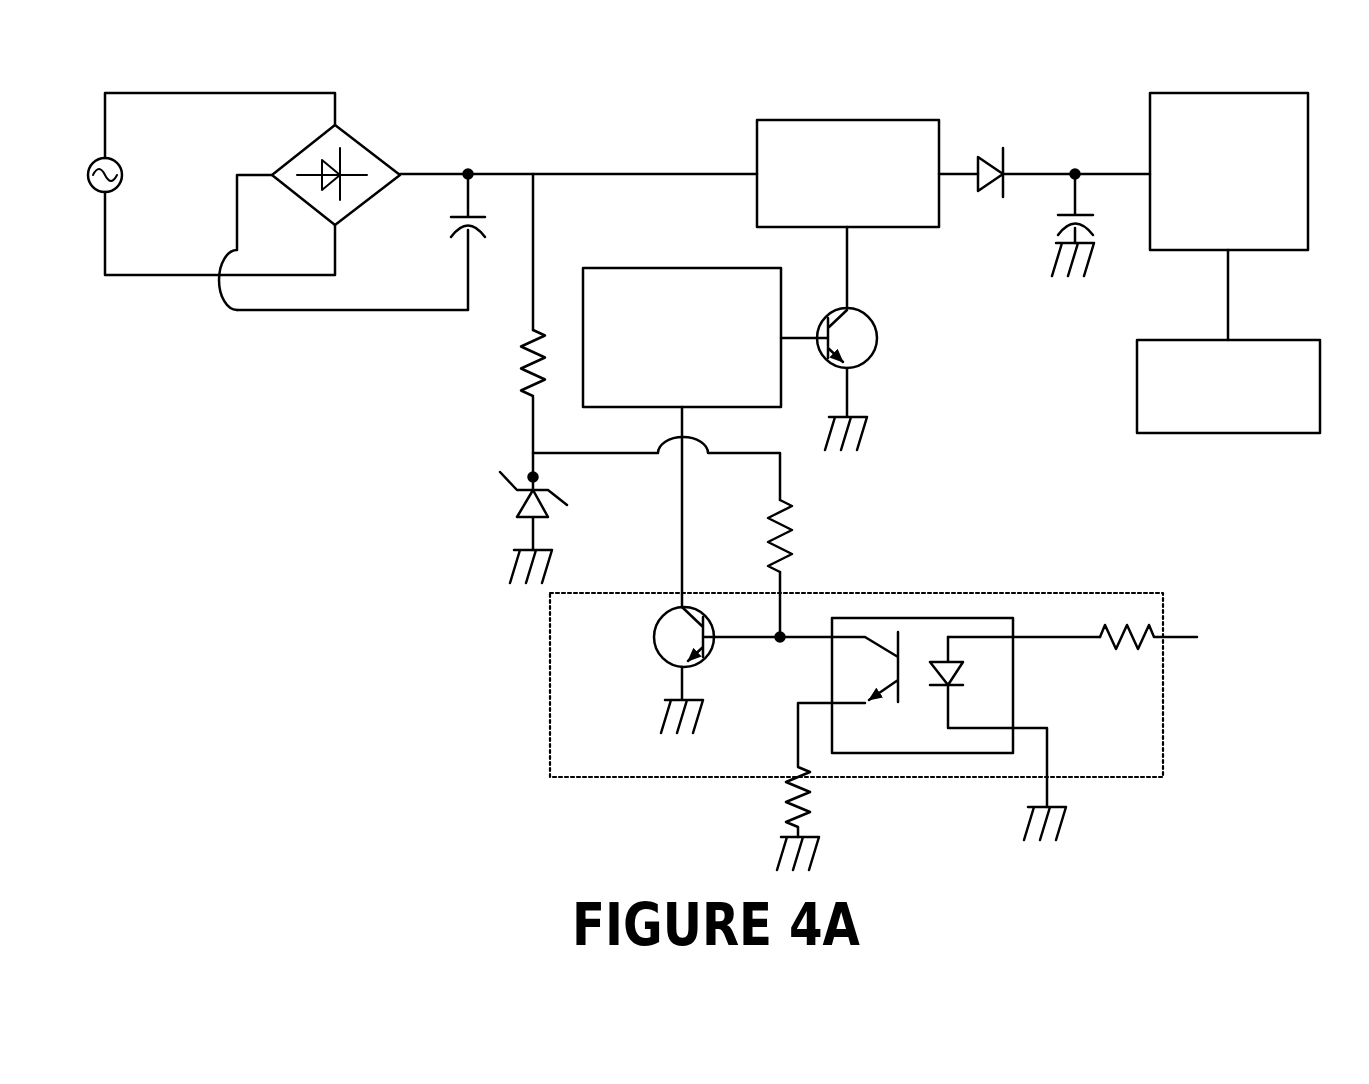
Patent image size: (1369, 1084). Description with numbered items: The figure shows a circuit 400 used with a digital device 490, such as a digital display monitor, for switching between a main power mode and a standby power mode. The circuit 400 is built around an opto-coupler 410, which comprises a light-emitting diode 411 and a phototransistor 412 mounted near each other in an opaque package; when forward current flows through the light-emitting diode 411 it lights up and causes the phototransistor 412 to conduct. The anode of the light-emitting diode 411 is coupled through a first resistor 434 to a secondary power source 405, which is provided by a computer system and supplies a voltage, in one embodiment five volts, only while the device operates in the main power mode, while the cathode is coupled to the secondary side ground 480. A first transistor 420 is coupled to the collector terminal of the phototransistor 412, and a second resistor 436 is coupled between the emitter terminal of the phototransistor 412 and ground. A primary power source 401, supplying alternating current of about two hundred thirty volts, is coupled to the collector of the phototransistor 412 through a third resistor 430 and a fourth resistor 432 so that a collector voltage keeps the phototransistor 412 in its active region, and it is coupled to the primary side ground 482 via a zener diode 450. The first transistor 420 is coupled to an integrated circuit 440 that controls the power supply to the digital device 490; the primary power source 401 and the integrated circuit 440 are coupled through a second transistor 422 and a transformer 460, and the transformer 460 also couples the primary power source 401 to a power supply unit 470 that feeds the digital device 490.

The circuit 400 is at (602, 619).
The primary power source 401 is at (417, 90).
The secondary power source 405 is at (1256, 729).
The opto-coupler 410 is at (934, 614).
The light-emitting diode 411 is at (931, 700).
The phototransistor 412 is at (886, 707).
The first transistor 420 is at (650, 658).
The second transistor 422 is at (885, 321).
The third resistor 430 is at (521, 340).
The fourth resistor 432 is at (802, 516).
The first resistor 434 is at (1124, 614).
The second resistor 436 is at (778, 800).
The integrated circuit 440 is at (663, 401).
The zener diode 450 is at (500, 485).
The transformer 460 is at (828, 197).
The power supply unit 470 is at (1210, 209).
The secondary side ground 480 is at (1071, 840).
The primary side ground 482 is at (506, 546).
The digital device 490 is at (1209, 424).